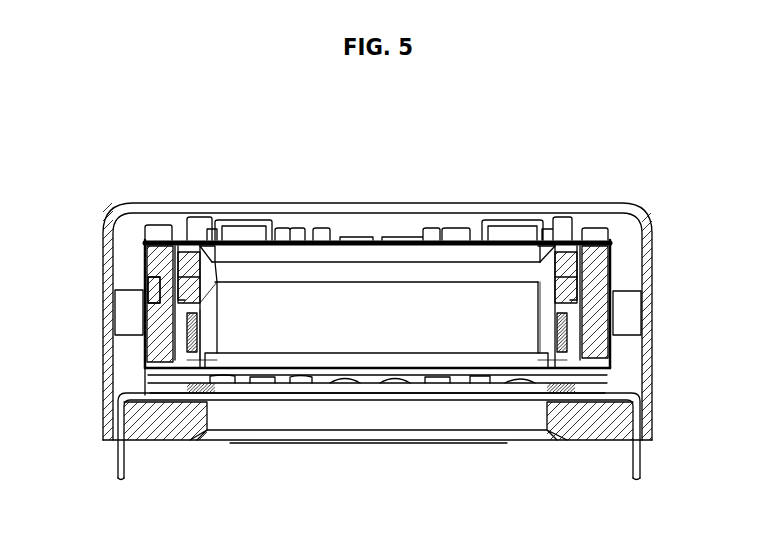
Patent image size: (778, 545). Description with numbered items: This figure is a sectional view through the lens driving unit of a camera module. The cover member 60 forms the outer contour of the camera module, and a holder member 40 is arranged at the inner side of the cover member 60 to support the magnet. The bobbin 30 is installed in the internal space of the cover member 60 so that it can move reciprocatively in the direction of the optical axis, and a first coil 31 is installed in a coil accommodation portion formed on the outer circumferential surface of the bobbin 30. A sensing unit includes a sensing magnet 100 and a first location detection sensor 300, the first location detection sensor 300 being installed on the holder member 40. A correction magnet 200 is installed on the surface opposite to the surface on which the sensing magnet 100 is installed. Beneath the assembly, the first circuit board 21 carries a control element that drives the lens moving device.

The sensing magnet 100 is at (190, 283).
The correction magnet 200 is at (573, 300).
The first location detection sensor 300 is at (143, 290).
The first coil 31 is at (183, 327).
The bobbin 30 is at (207, 302).
The holder member 40 is at (173, 338).
The cover member 60 is at (652, 378).
The first circuit board 21 is at (640, 461).